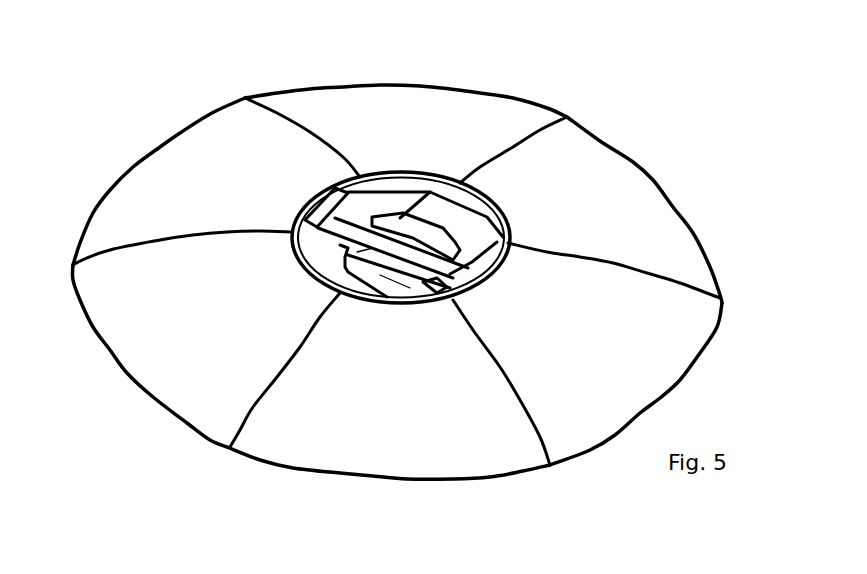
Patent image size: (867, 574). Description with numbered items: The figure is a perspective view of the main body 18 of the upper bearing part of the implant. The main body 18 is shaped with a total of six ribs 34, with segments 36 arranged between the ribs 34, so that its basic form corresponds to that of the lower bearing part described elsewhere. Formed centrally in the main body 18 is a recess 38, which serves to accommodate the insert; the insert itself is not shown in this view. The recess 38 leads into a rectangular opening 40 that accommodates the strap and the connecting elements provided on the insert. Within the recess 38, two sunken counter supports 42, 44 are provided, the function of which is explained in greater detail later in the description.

The main body 18 is at (198, 168).
The ribs 34 is at (520, 137).
The segments 36 is at (665, 220).
The recess 38 is at (323, 250).
The rectangular opening 40 is at (308, 227).
The sunken counter support 42 is at (420, 290).
The sunken counter support 44 is at (417, 240).